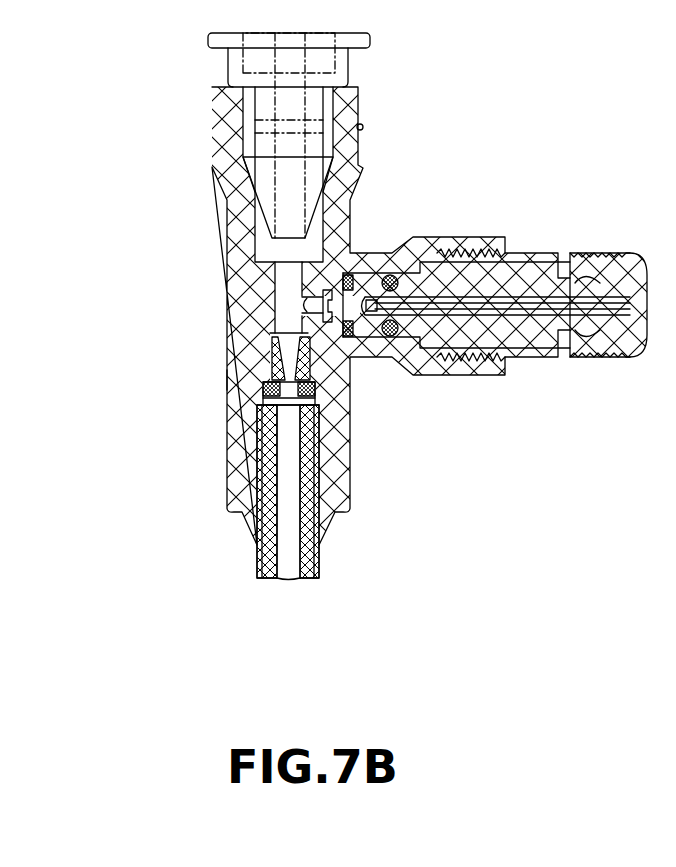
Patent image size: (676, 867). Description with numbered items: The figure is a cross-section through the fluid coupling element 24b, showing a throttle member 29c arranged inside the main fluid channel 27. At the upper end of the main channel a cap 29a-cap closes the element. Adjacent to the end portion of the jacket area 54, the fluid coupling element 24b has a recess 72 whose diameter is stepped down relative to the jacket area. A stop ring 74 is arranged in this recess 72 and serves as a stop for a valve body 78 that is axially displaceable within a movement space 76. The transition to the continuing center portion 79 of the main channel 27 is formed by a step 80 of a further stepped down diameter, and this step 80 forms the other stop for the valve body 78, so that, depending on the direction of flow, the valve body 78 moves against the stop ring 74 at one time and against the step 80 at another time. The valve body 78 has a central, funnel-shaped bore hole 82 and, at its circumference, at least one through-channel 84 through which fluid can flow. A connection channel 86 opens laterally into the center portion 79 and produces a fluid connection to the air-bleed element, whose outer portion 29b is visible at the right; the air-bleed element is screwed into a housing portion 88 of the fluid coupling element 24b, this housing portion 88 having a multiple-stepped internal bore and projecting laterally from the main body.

The fluid coupling element 24b is at (192, 290).
The main fluid channel 27 is at (325, 256).
The cap 29a-cap is at (289, 135).
The knurled cap 29b is at (554, 253).
The throttle member 29c is at (238, 380).
The jacket area 54 is at (320, 575).
The recess 72 is at (320, 452).
The stop ring 74 is at (316, 426).
The movement space 76 is at (286, 342).
The valve body 78 is at (266, 393).
The center portion of the main channel 79 is at (290, 292).
The step 80 is at (282, 329).
The funnel-shaped bore hole 82 is at (296, 349).
The through-channel 84 is at (300, 378).
The connection channel 86 is at (395, 252).
The housing portion 88 is at (452, 377).